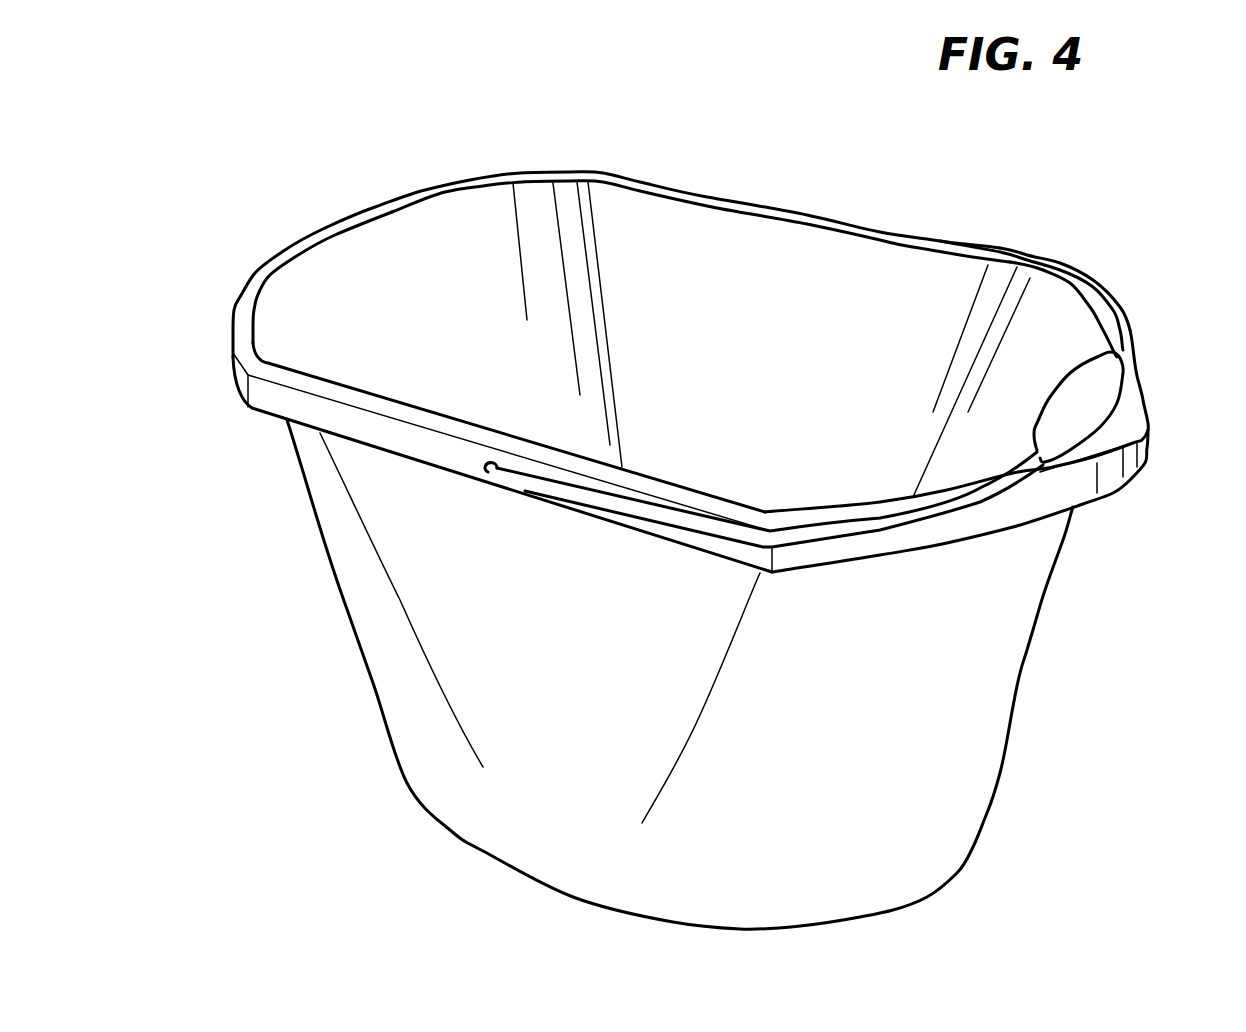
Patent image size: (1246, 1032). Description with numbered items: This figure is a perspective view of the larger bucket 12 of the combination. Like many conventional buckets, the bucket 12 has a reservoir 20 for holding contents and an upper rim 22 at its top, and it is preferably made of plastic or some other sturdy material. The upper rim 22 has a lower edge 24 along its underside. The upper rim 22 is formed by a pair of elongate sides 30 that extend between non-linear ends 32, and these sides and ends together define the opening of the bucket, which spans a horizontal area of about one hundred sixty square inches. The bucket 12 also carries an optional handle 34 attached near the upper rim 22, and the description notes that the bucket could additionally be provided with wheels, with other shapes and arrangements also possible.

The bucket 12 is at (700, 534).
The reservoir 20 is at (465, 632).
The upper rim 22 is at (700, 385).
The lower edge 24 is at (320, 433).
The elongate sides 30 is at (735, 203).
The non-linear ends 32 is at (393, 202).
The handle 34 is at (1103, 293).